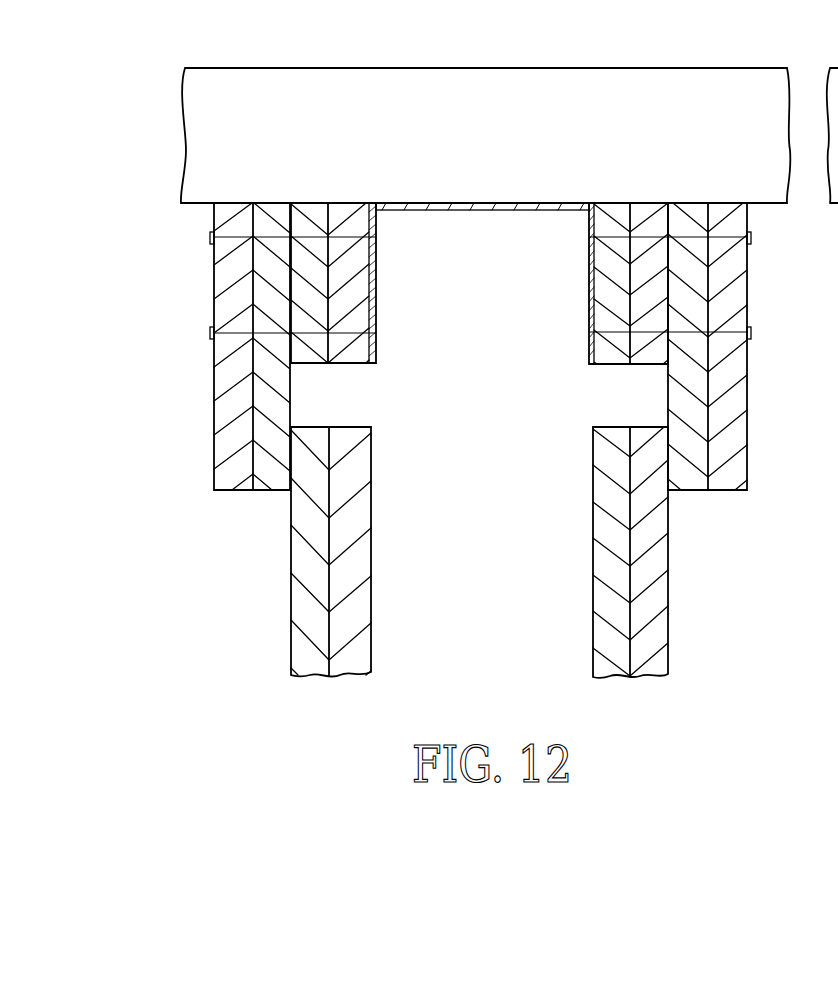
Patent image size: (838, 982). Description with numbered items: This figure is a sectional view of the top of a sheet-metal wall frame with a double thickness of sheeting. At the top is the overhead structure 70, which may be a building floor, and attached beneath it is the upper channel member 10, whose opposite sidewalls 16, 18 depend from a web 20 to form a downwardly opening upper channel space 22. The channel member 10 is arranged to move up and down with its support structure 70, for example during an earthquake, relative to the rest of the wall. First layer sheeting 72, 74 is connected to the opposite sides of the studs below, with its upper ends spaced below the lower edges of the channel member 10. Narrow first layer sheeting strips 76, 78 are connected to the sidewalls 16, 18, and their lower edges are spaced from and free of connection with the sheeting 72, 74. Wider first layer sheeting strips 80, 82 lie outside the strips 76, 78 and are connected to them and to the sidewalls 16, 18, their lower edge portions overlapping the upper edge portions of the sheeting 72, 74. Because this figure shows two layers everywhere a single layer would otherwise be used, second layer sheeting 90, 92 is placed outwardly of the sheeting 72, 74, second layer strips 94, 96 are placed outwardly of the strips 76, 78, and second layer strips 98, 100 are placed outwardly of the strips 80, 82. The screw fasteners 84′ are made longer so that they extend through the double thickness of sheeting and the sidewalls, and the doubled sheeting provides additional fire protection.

The upper channel member 10 is at (540, 203).
The sidewall 16 is at (374, 308).
The sidewall 18 is at (588, 308).
The web 20 is at (512, 211).
The upper channel space 22 is at (483, 275).
The overhead structure 70 is at (349, 85).
The sheeting 72 is at (356, 552).
The sheeting 74 is at (610, 563).
The sheeting strip 76 is at (358, 275).
The sheeting strip 78 is at (605, 268).
The sheeting strip 80 is at (262, 432).
The sheeting strip 82 is at (700, 436).
The screw fastener 84′ is at (282, 240).
The second layer sheeting 90 is at (308, 596).
The second layer sheeting 92 is at (652, 576).
The second layer sheeting strip 94 is at (300, 272).
The second layer sheeting strip 96 is at (650, 300).
The second layer sheeting strip 98 is at (228, 374).
The second layer sheeting strip 100 is at (737, 373).